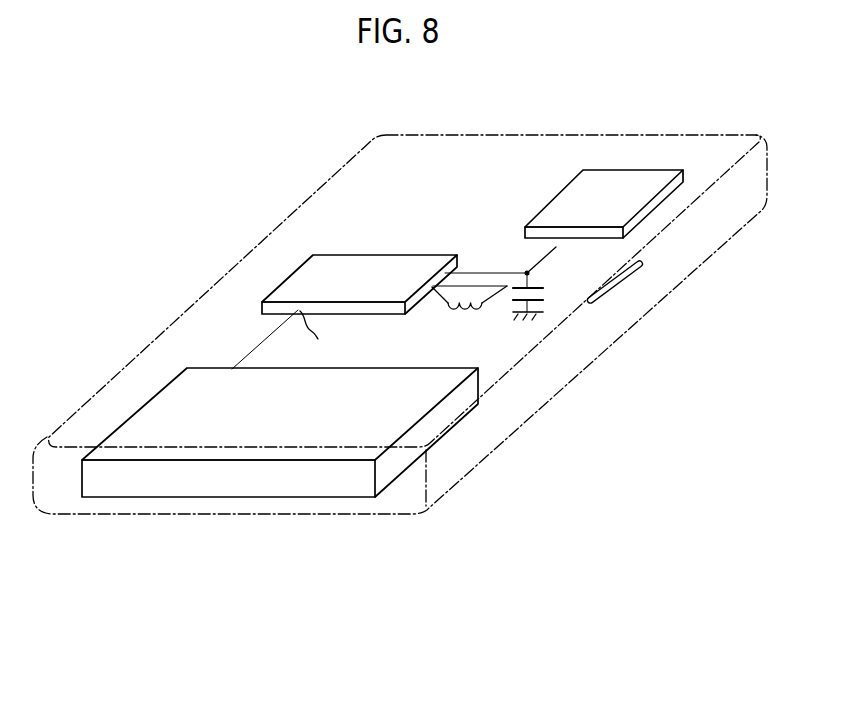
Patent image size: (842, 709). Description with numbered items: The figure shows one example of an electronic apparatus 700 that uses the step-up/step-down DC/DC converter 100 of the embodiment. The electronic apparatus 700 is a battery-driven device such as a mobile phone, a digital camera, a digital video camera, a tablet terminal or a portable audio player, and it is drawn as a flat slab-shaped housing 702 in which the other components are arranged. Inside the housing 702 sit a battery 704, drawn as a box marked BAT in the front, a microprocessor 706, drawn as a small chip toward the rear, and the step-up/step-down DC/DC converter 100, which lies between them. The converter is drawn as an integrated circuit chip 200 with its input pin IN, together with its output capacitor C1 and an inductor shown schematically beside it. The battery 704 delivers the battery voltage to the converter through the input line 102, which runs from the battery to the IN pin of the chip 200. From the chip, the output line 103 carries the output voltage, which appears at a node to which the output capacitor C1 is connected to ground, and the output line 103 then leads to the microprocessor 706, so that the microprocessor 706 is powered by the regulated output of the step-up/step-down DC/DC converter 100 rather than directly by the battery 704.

The electronic apparatus 700 is at (423, 639).
The housing 702 is at (626, 135).
The battery 704 is at (115, 475).
The microprocessor 706 is at (580, 190).
The power supply IC 200 is at (333, 270).
The step-up/step-down DC/DC converter 100 is at (592, 306).
The input line 102 is at (269, 337).
The output line 103 is at (553, 253).
The output capacitor C1 is at (544, 299).